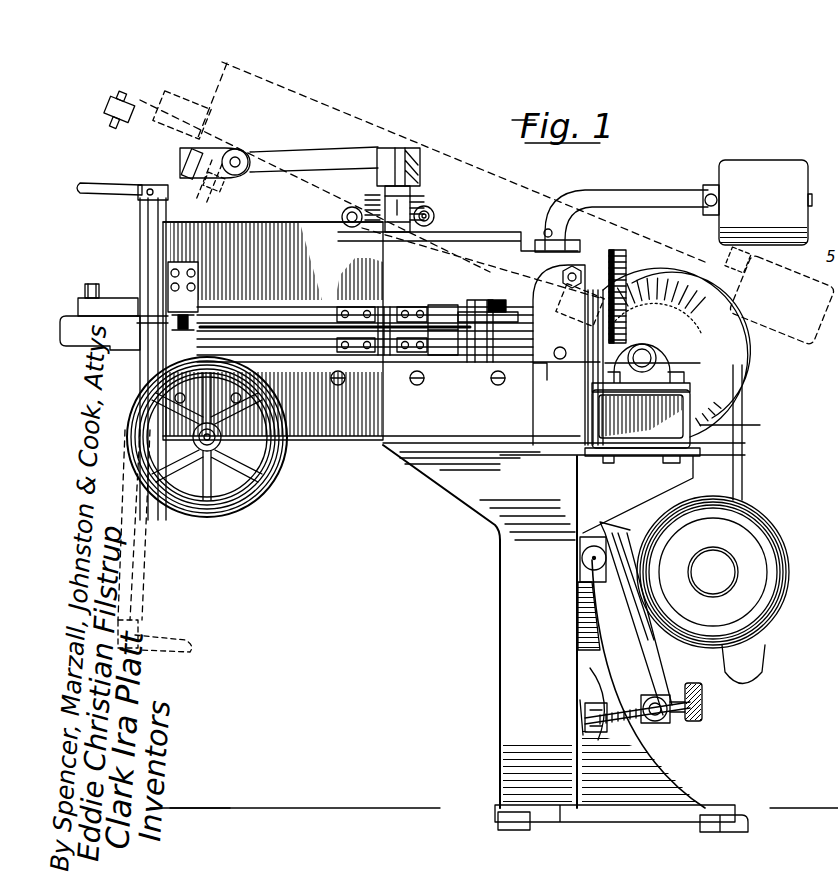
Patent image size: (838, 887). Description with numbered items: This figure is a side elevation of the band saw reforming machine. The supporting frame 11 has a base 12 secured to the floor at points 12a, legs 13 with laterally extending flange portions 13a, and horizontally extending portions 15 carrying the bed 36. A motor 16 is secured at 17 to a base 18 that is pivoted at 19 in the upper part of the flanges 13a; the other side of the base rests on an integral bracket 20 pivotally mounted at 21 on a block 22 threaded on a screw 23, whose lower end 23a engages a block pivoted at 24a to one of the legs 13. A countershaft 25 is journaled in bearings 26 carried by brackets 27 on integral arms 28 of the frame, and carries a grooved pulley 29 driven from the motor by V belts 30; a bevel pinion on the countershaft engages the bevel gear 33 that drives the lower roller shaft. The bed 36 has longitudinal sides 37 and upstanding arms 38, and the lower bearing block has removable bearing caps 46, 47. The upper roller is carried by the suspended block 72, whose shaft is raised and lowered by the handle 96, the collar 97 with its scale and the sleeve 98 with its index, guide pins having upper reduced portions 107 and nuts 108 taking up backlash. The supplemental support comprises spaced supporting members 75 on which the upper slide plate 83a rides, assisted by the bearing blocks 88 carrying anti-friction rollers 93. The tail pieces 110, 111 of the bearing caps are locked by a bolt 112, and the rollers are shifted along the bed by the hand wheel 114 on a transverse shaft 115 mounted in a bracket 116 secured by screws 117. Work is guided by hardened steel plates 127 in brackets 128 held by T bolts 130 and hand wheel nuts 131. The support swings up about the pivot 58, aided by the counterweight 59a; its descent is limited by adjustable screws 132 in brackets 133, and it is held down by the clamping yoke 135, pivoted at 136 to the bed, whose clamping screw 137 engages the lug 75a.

The supporting frame 11 is at (487, 490).
The base 12 is at (498, 810).
The securing points 12a is at (515, 800).
The legs 13 is at (500, 686).
The flange portions 13a is at (620, 755).
The horizontally extending portions 15 is at (383, 447).
The motor 16 is at (765, 592).
The motor securing point 17 is at (606, 522).
The motor base 18 is at (638, 605).
The pivot 19 is at (578, 548).
The bracket 20 is at (660, 700).
The pivot 21 is at (694, 714).
The block 22 is at (655, 722).
The screw 23 is at (600, 690).
The lower end of screw 23a is at (580, 725).
The pivot 24a is at (596, 735).
The countershaft 25 is at (656, 346).
The bearings 26 is at (658, 358).
The brackets 27 is at (700, 418).
The arms 28 is at (675, 470).
The grooved pulley 29 is at (660, 280).
The V belts 30 is at (744, 451).
The bevel gear 33 is at (620, 255).
The bed 36 is at (332, 445).
The sides 37 is at (305, 440).
The arms 38 is at (540, 292).
The bearing cap 46 is at (408, 355).
The bearing cap 47 is at (355, 355).
The pivot 58 is at (568, 284).
The counterweight 59a is at (752, 154).
The block 72 is at (348, 307).
The supporting members 75 is at (472, 182).
The lug 75a is at (210, 175).
The upper slide plate 83a is at (435, 233).
The bearing blocks 88 is at (343, 217).
The anti-friction rollers 93 is at (432, 216).
The handle 96 is at (328, 158).
The collar 97 is at (416, 162).
The sleeve 98 is at (412, 198).
The upper reduced portions 107 is at (380, 195).
The nuts 108 is at (368, 202).
The tail piece 110 is at (125, 332).
The tail piece 111 is at (150, 120).
The bolt 112 is at (126, 96).
The hand wheel 114 is at (232, 500).
The transverse horizontal shaft 115 is at (181, 427).
The bracket 116 is at (232, 475).
The screws 117 is at (210, 420).
The hardened steel plates 127 is at (405, 307).
The brackets 128 is at (460, 355).
The T bolts 130 is at (490, 300).
The hand wheel nuts 131 is at (460, 305).
The adjustable screws 132 is at (222, 137).
The brackets 133 is at (226, 118).
The clamping yoke 135 is at (140, 228).
The pivot 136 is at (150, 410).
The clamping screw 137 is at (130, 197).